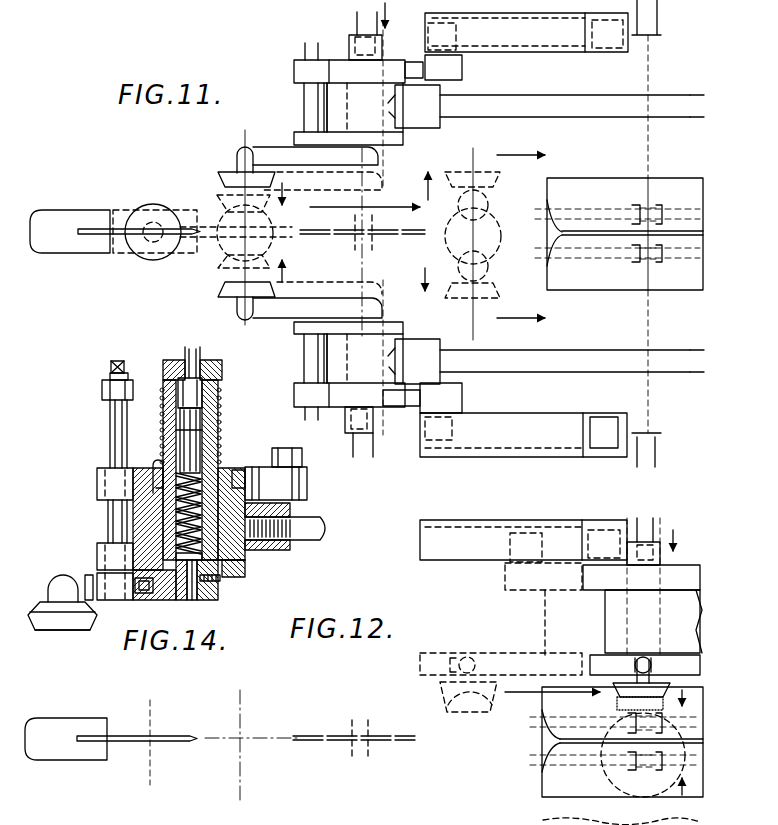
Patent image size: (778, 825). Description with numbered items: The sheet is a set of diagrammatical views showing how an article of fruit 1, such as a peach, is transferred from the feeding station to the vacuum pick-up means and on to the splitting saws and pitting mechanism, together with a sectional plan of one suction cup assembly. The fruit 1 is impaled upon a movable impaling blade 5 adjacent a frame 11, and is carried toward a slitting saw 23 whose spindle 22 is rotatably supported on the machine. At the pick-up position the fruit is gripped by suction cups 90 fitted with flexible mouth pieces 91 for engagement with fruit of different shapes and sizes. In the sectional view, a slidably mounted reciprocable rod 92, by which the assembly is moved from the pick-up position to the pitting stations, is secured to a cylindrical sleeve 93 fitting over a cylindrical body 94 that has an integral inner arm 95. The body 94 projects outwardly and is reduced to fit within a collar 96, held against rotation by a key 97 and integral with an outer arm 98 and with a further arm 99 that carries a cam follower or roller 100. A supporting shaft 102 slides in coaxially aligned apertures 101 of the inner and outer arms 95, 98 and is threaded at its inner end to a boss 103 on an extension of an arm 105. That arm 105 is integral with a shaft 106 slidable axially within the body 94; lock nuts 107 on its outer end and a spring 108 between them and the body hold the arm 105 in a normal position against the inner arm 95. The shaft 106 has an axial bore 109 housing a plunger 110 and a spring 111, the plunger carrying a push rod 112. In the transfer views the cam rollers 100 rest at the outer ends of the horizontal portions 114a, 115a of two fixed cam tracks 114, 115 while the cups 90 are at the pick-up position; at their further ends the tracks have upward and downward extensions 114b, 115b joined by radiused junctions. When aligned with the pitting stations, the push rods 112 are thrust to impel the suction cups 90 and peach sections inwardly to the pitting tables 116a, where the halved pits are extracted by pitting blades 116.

In FIG. 11, the article of fruit 1 is at (152, 212).
In FIG. 12, the article of fruit 1 is at (495, 705).
In FIG. 11, the movable impaling blade 5 is at (162, 244).
In FIG. 12, the movable impaling blade 5 is at (135, 737).
In FIG. 11, the frame 11 is at (32, 232).
In FIG. 12, the frame 11 is at (66, 718).
In FIG. 11, the spindle 22 is at (372, 247).
In FIG. 12, the spindle 22 is at (370, 732).
In FIG. 11, the slitting saw 23 is at (332, 227).
In FIG. 12, the slitting saw 23 is at (322, 738).
In FIG. 14, the suction cup 90 is at (42, 604).
In FIG. 11, the flexible mouth piece 91 is at (222, 184).
In FIG. 14, the flexible mouth piece 91 is at (58, 624).
In FIG. 12, the flexible mouth piece 91 is at (442, 690).
In FIG. 11, the reciprocable rod 92 is at (528, 100).
In FIG. 14, the reciprocable rod 92 is at (318, 534).
In FIG. 11, the cylindrical sleeve 93 is at (400, 128).
In FIG. 14, the cylindrical sleeve 93 is at (243, 572).
In FIG. 12, the cylindrical sleeve 93 is at (700, 590).
In FIG. 14, the cylindrical body 94 is at (108, 528).
In FIG. 11, the inner arm 95 is at (294, 138).
In FIG. 14, the inner arm 95 is at (97, 558).
In FIG. 11, the collar 96 is at (337, 66).
In FIG. 14, the collar 96 is at (228, 470).
In FIG. 14, the key 97 is at (156, 460).
In FIG. 11, the outer arm 98 is at (294, 72).
In FIG. 14, the outer arm 98 is at (97, 487).
In FIG. 11, the arm 99 is at (414, 62).
In FIG. 14, the arm 99 is at (245, 470).
In FIG. 11, the cam follower 100 is at (465, 50).
In FIG. 14, the cam follower 100 is at (302, 458).
In FIG. 12, the cam follower 100 is at (528, 530).
In FIG. 14, the aperture 101 is at (97, 474).
In FIG. 11, the supporting shaft 102 is at (304, 110).
In FIG. 14, the supporting shaft 102 is at (110, 445).
In FIG. 14, the boss 103 is at (102, 598).
In FIG. 11, the arm 105 is at (337, 160).
In FIG. 14, the arm 105 is at (148, 596).
In FIG. 12, the arm 105 is at (560, 664).
In FIG. 11, the shaft 106 is at (380, 48).
In FIG. 14, the shaft 106 is at (215, 442).
In FIG. 14, the lock nuts 107 is at (222, 368).
In FIG. 14, the spring 108 is at (221, 408).
In FIG. 14, the axial bore 109 is at (178, 428).
In FIG. 14, the plunger 110 is at (212, 458).
In FIG. 14, the spring 111 is at (230, 572).
In FIG. 11, the push rod 112 is at (356, 23).
In FIG. 14, the push rod 112 is at (185, 352).
In FIG. 11, the cam track 114 is at (529, 420).
In FIG. 11, the horizontal portion 114a is at (505, 448).
In FIG. 11, the upward extension 114b is at (605, 420).
In FIG. 11, the cam track 115 is at (516, 44).
In FIG. 12, the cam track 115 is at (475, 530).
In FIG. 11, the horizontal portion 115a is at (548, 43).
In FIG. 12, the horizontal portion 115a is at (478, 552).
In FIG. 11, the downward extension 115b is at (603, 43).
In FIG. 12, the downward extension 115b is at (606, 530).
In FIG. 11, the pitting blade 116 is at (650, 206).
In FIG. 12, the pitting blade 116 is at (662, 722).
In FIG. 11, the pitting table 116a is at (596, 178).
In FIG. 12, the pitting table 116a is at (703, 702).